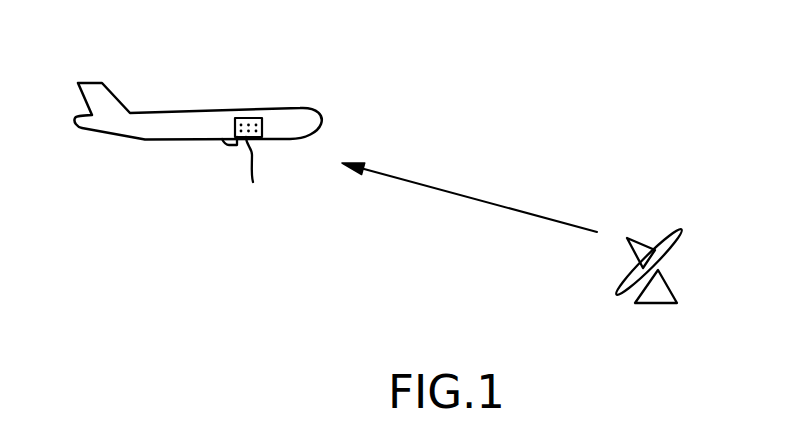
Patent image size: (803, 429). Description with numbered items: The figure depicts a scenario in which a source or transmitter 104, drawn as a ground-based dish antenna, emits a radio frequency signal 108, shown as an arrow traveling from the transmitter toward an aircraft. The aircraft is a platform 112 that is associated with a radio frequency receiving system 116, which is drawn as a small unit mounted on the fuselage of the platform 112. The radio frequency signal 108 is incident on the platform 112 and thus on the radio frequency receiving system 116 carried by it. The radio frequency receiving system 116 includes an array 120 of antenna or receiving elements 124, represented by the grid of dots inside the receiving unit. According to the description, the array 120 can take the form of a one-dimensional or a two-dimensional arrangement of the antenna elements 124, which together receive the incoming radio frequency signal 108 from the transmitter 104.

The source or transmitter 104 is at (668, 285).
The radio frequency signal 108 is at (493, 203).
The platform 112 is at (172, 113).
The radio frequency receiving system 116 is at (252, 118).
The array 120 is at (236, 124).
The antenna or receiving elements 124 is at (252, 172).